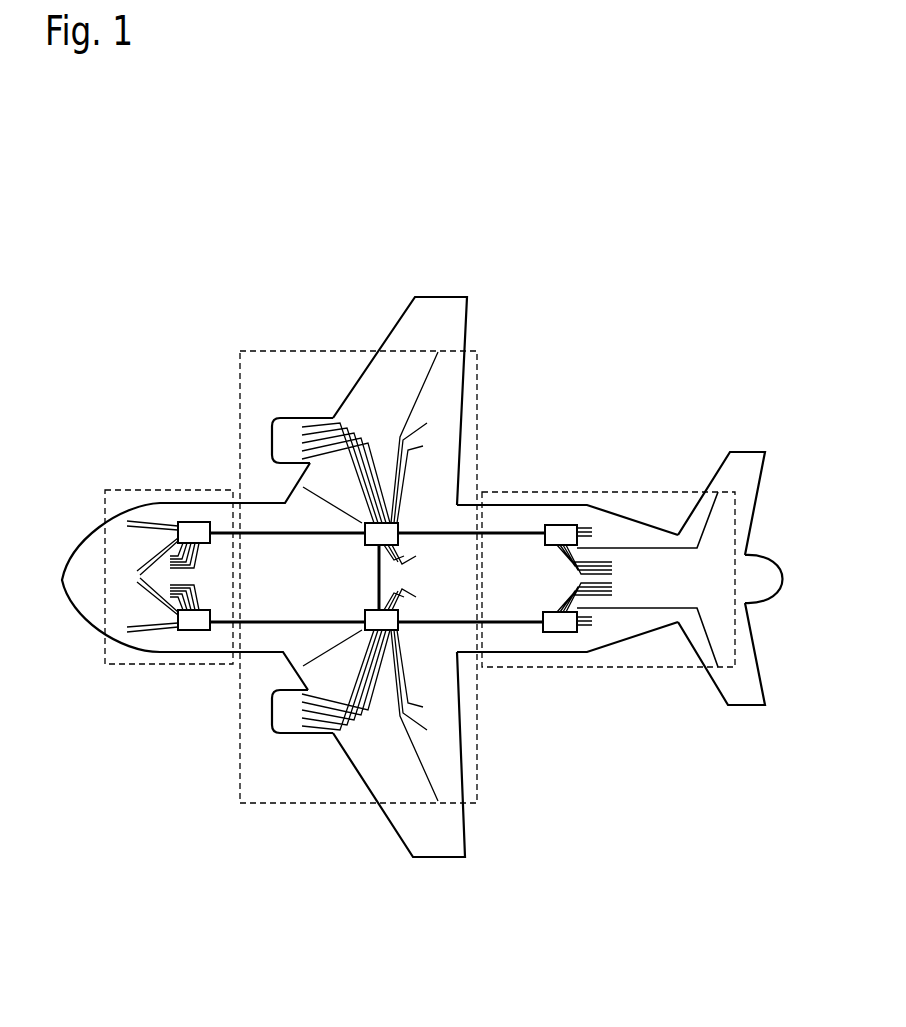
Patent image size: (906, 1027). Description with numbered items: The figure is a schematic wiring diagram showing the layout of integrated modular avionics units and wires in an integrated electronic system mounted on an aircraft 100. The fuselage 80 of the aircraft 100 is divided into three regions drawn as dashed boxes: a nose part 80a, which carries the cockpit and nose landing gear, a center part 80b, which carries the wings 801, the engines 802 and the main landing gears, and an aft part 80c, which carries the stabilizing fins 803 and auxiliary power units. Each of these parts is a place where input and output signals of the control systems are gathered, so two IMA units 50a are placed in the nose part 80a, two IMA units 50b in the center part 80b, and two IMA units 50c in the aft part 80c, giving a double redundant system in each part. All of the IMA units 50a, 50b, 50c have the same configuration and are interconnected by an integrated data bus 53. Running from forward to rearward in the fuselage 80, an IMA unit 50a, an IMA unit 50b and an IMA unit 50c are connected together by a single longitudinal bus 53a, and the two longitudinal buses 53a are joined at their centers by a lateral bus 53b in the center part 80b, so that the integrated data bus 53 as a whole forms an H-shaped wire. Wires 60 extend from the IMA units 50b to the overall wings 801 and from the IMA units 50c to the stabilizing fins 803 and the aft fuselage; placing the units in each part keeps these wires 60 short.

The aircraft 100 is at (608, 367).
The fuselage 80 is at (86, 538).
The nose part 80a is at (148, 490).
The center part 80b is at (238, 387).
The aft part 80c is at (650, 667).
The IMA unit 50a is at (182, 632).
The IMA unit 50b is at (399, 632).
The IMA unit 50c is at (558, 634).
The integrated data bus 53 is at (570, 427).
The longitudinal bus 53a is at (418, 533).
The lateral bus 53b is at (382, 578).
The wires 60 is at (648, 548).
The wings 801 is at (407, 828).
The engines 802 is at (272, 714).
The stabilizing fins 803 is at (737, 697).